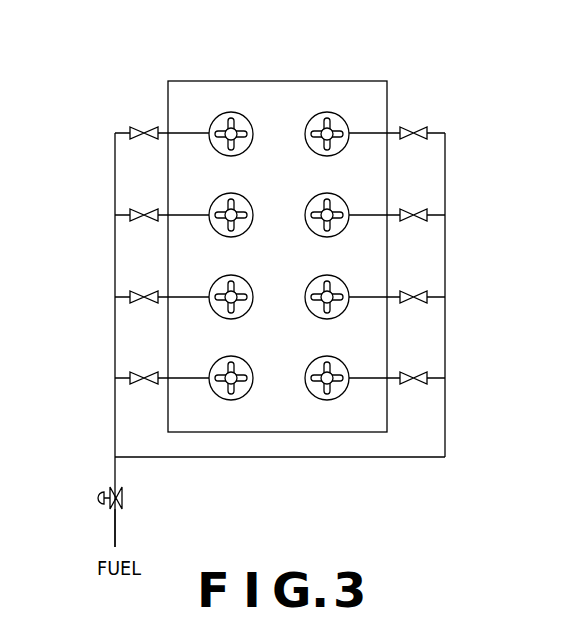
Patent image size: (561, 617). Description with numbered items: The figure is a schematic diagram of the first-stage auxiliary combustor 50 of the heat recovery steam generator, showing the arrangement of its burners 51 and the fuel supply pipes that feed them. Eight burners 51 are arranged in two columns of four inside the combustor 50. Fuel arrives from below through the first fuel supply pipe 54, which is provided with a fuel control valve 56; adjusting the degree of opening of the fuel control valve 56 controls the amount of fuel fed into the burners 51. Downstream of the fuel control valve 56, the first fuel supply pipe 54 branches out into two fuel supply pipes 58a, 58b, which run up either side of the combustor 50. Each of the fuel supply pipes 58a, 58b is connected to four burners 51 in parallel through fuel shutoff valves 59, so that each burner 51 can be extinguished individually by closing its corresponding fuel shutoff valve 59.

The first-stage auxiliary combustor 50 is at (274, 74).
The burner 51 is at (247, 120).
The first fuel supply pipe 54 is at (118, 527).
The fuel control valve 56 is at (97, 498).
The fuel supply pipe 58a is at (445, 335).
The fuel supply pipe 58b is at (115, 343).
The fuel shutoff valve 59 is at (405, 127).